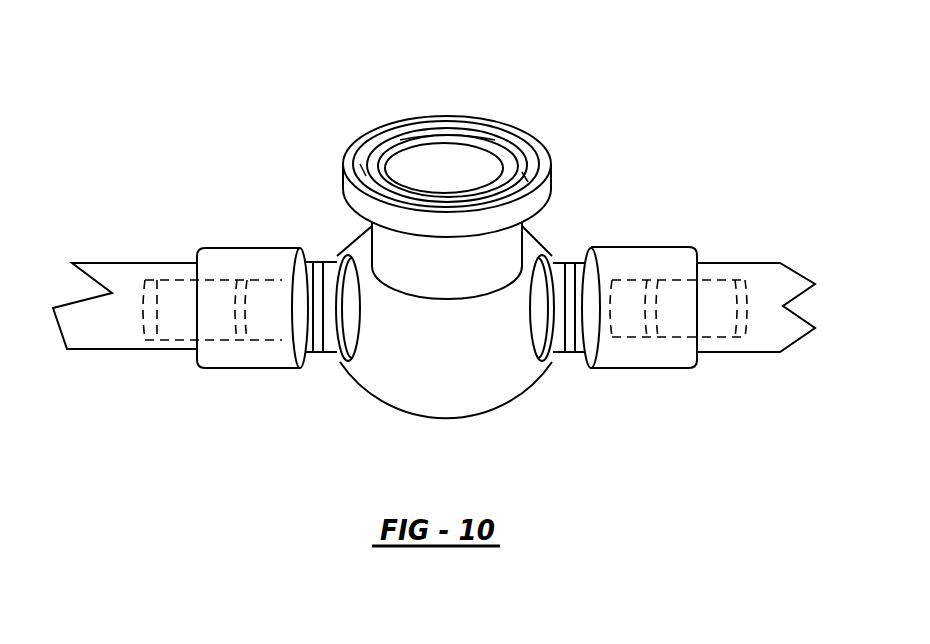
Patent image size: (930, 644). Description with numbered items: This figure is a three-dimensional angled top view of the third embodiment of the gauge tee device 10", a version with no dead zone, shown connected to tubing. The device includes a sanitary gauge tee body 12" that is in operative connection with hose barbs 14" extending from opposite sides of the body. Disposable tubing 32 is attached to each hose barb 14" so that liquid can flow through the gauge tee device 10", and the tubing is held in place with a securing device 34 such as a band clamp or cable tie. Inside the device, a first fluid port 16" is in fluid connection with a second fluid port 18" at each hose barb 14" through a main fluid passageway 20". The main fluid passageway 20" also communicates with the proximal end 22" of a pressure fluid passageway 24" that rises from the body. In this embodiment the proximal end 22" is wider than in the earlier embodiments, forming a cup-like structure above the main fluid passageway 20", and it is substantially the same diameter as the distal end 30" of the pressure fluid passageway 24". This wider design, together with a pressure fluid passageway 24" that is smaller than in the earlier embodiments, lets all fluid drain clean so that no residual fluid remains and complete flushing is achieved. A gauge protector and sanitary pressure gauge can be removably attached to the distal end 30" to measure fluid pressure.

The gauge tee device 10 is at (681, 112).
The sanitary gauge tee body 12 is at (497, 383).
The hose barbs 14 is at (177, 318).
The first fluid port 16 is at (143, 307).
The second fluid port 18 is at (745, 282).
The main fluid passageway 20 is at (748, 295).
The proximal end 22 is at (445, 298).
The pressure fluid passageway 24 is at (468, 163).
The distal end 30 is at (389, 120).
The tubing 32 is at (128, 277).
The securing device 34 is at (270, 357).